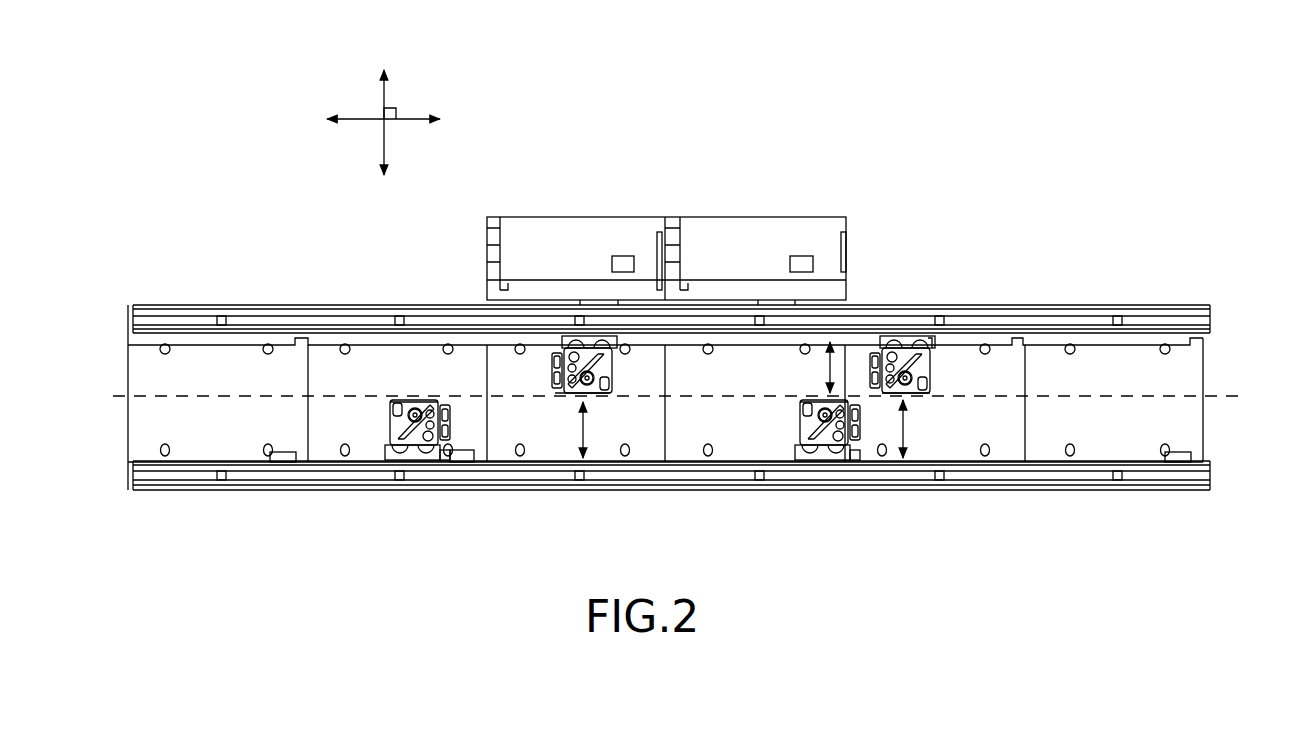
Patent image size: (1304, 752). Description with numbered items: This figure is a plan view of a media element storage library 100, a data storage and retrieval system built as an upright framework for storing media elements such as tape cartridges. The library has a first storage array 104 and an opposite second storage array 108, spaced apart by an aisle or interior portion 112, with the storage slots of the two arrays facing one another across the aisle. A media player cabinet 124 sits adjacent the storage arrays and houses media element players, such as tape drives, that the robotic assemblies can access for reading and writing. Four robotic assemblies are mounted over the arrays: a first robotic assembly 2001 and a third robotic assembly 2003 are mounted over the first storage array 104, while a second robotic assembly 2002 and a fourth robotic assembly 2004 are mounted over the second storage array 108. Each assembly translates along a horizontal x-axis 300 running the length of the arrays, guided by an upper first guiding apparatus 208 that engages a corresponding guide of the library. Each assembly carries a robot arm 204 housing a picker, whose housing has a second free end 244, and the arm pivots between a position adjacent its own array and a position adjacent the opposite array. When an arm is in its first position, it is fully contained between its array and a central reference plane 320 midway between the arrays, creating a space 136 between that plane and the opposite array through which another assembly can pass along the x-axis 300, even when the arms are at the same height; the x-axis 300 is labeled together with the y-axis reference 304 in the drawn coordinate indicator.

The media element storage library 100 is at (163, 266).
The first storage wall or array 104 is at (118, 328).
The second storage wall or array 108 is at (118, 467).
The aisle or interior portion 112 is at (1195, 372).
The media player cabinet 124 is at (735, 245).
The space 136 is at (582, 450).
The first robotic assembly 2001 is at (909, 330).
The second robotic assembly 2002 is at (825, 462).
The third robotic assembly 2003 is at (560, 386).
The fourth robotic assembly 2004 is at (430, 458).
The robot arm 204 is at (385, 421).
The first guiding apparatus 208 is at (946, 352).
The second free end 244 is at (420, 407).
The x-axis 300 is at (412, 122).
The Y axis 304 is at (386, 92).
The central reference plane 320 is at (115, 398).